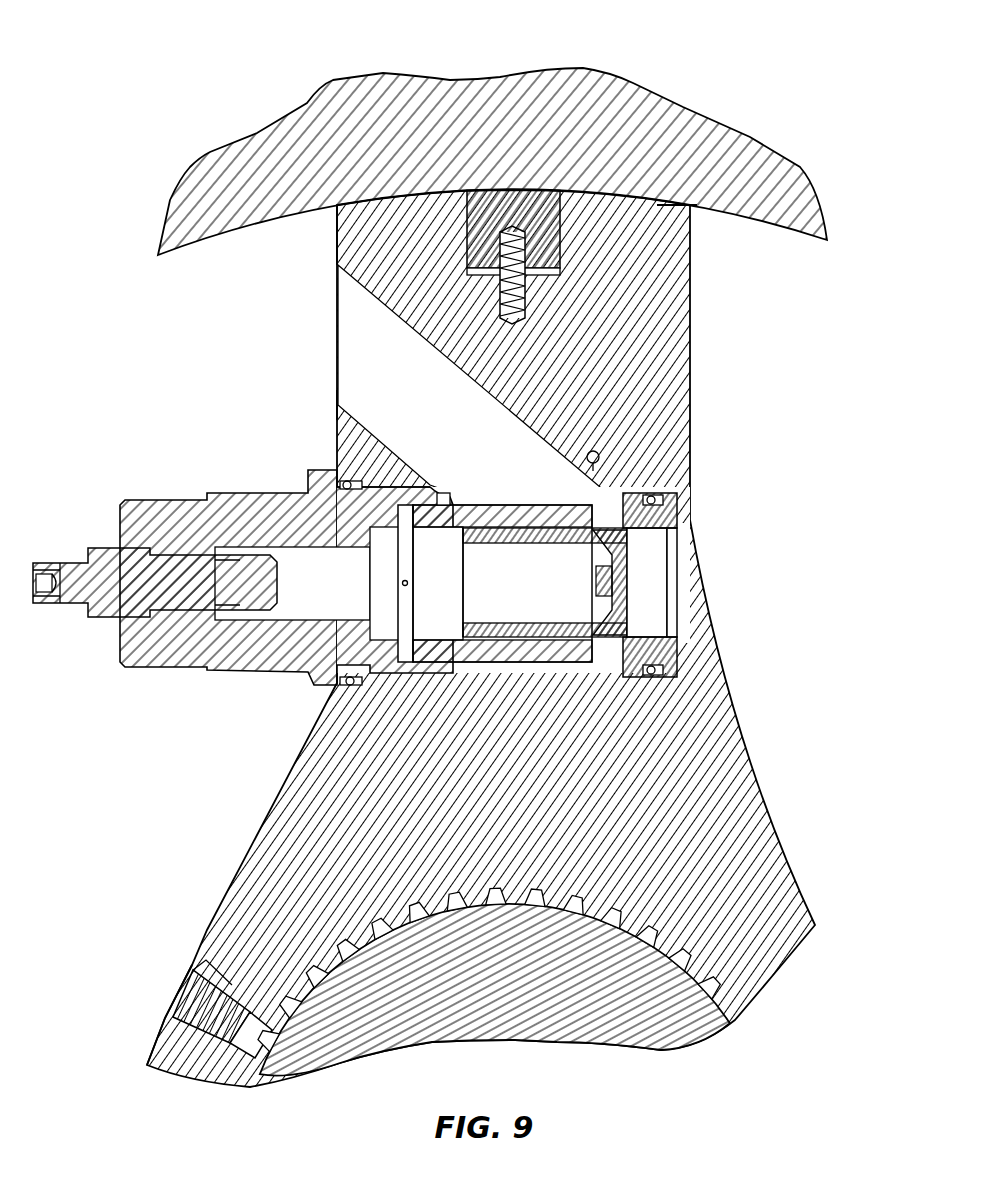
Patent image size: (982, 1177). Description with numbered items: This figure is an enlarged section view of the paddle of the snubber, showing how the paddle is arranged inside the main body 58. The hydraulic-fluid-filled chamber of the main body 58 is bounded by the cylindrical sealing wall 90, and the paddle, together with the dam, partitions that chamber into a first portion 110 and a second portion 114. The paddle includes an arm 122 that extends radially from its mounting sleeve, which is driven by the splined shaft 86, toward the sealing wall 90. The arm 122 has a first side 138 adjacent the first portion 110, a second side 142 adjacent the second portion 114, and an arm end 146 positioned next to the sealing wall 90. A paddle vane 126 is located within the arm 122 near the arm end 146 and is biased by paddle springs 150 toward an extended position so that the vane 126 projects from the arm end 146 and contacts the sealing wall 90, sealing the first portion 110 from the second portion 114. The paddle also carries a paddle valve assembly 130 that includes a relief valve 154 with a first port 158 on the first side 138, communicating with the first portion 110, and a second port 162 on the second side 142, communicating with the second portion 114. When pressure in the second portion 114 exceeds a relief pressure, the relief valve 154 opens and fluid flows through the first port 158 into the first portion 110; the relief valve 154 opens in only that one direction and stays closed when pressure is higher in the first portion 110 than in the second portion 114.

The main body 58 is at (350, 117).
The paddle vane 126 is at (497, 203).
The sealing wall 90 is at (272, 220).
The first portion 110 is at (203, 272).
The second portion 114 is at (787, 255).
The first side 138 is at (328, 242).
The first port 158 is at (338, 405).
The paddle springs 150 is at (497, 295).
The second side 142 is at (691, 362).
The arm end 146 is at (657, 207).
The arm 122 is at (810, 452).
The second port 162 is at (690, 644).
The relief valve 154 is at (265, 692).
The paddle valve assembly 130 is at (192, 782).
The shaft 86 is at (673, 1004).